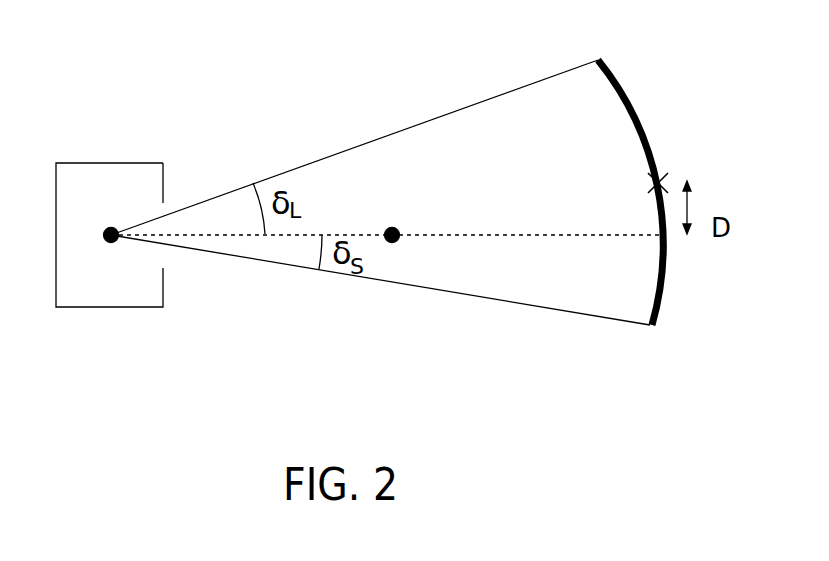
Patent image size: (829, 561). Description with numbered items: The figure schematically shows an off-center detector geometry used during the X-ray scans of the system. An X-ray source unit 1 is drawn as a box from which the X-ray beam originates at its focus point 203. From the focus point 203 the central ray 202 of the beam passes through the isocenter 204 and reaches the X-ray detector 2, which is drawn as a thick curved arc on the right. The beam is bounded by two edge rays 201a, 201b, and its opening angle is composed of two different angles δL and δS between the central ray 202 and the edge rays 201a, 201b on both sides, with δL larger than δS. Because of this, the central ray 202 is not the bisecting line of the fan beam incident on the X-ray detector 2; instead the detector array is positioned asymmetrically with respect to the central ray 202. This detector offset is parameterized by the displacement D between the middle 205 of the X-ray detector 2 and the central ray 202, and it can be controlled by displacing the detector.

The imaging device 1 is at (115, 163).
The X-ray detector 2 is at (666, 295).
The edge ray 201a is at (448, 112).
The edge ray 201b is at (428, 288).
The central ray 202 is at (523, 236).
The focus point 203 is at (111, 243).
The isocenter 204 is at (392, 228).
The middle of the X-ray detector 205 is at (666, 175).